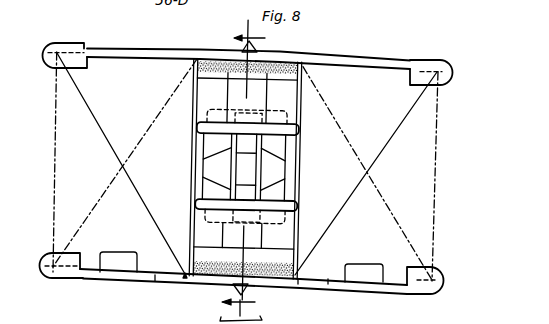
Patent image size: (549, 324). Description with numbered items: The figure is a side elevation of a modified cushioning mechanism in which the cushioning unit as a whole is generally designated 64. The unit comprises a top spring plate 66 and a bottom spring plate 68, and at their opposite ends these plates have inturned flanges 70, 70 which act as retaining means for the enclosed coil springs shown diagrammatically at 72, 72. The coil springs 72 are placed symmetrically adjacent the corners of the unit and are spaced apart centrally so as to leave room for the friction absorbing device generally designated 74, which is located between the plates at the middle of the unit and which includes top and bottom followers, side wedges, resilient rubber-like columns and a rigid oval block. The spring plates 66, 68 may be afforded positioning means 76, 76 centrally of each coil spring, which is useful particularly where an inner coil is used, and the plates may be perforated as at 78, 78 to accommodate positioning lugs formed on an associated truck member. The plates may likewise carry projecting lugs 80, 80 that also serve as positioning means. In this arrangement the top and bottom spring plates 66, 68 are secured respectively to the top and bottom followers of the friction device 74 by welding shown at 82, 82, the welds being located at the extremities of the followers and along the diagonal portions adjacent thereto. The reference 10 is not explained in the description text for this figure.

The apparatus assembly 10 is at (252, 174).
The cushioning unit 64 is at (443, 60).
The top spring plate 66 is at (335, 58).
The bottom spring plate 68 is at (111, 273).
The inturned flange 70 is at (47, 52).
The coil spring 72 is at (120, 162).
The friction absorbing device 74 is at (297, 138).
The positioning means 76 is at (120, 252).
The perforation 78 is at (184, 278).
The projecting lug 80 is at (235, 38).
The welding 82 is at (230, 62).